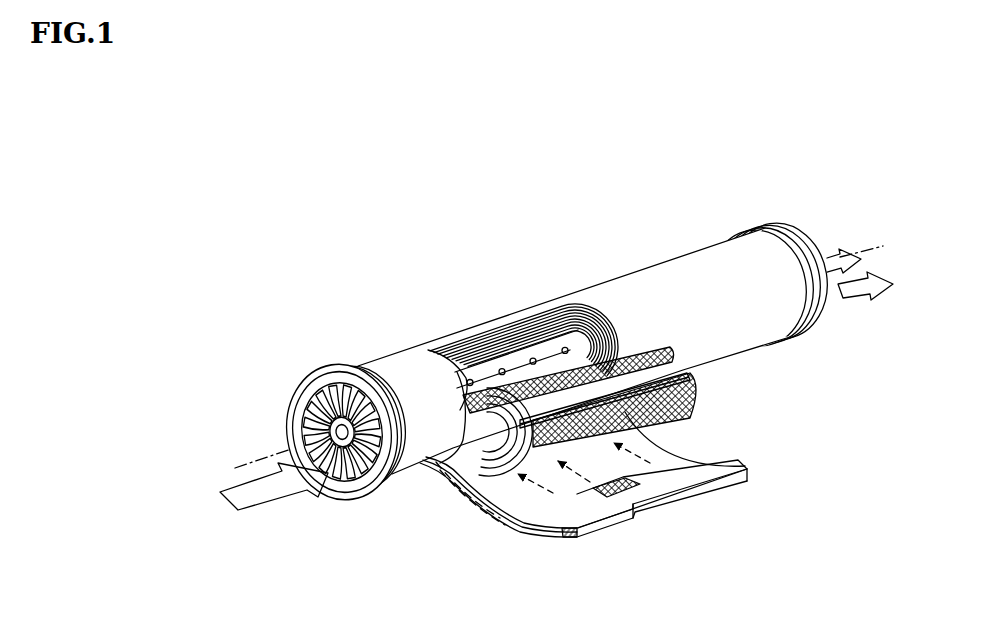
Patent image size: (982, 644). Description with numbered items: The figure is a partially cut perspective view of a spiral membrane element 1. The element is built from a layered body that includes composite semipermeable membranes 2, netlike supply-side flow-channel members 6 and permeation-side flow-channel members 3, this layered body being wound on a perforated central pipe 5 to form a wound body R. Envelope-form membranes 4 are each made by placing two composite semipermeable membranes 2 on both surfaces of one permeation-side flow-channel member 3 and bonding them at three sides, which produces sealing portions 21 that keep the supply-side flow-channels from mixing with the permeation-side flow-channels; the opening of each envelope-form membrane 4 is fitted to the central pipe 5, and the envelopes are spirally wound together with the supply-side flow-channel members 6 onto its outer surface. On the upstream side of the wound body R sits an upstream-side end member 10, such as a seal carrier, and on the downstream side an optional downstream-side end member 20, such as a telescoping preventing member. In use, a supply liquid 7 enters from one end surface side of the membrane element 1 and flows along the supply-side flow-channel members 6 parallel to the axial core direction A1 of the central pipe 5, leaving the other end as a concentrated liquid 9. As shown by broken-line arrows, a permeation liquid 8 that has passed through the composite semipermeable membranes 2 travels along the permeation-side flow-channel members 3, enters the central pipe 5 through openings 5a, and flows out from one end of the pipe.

The membrane element 1 is at (764, 381).
The composite semipermeable membrane 2 is at (693, 377).
The permeation-side flow-channel member 3 is at (455, 480).
The envelope-form membrane 4 is at (731, 507).
The central pipe 5 is at (548, 360).
The openings 5a is at (470, 379).
The supply-side flow-channel member 6 is at (646, 350).
The supply liquid 7 is at (254, 497).
The permeation liquid 8 is at (658, 436).
The concentrated liquid 9 is at (862, 300).
The upstream-side end member 10 is at (330, 362).
The downstream-side end member 20 is at (803, 340).
The sealing portion 21 is at (648, 489).
The wound body R is at (595, 281).
The axial core direction A1 is at (246, 464).